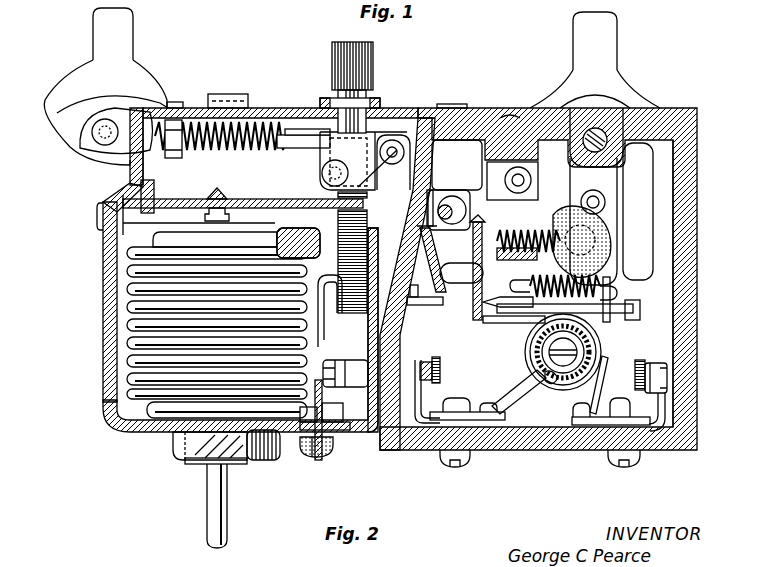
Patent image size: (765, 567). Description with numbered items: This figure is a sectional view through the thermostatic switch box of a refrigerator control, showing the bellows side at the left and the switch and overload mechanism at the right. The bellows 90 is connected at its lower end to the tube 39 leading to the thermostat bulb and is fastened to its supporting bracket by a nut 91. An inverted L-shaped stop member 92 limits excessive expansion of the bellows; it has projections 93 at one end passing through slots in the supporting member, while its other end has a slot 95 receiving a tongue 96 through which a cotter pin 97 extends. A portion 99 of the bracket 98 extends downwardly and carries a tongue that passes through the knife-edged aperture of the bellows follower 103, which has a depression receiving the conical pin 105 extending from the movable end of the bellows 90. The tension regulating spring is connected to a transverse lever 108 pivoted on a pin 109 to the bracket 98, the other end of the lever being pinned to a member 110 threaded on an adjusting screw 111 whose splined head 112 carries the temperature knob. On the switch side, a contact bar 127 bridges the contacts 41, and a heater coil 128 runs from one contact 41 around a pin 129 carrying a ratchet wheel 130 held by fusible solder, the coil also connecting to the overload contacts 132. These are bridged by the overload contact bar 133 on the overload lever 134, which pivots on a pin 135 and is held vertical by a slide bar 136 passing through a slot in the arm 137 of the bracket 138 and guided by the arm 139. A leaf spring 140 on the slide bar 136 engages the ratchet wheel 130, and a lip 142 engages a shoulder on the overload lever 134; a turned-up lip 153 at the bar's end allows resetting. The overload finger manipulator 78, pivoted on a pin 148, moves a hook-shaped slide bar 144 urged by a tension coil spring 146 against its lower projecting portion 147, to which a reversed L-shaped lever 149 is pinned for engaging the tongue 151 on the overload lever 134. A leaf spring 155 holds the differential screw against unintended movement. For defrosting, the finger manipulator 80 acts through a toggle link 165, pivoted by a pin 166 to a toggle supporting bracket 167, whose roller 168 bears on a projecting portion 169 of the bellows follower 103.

The tube 39 is at (220, 507).
The contacts 41 is at (665, 376).
The overload finger manipulator 78 is at (606, 40).
The defrosting finger manipulator 80 is at (122, 37).
The bellows 90 is at (143, 307).
The nut 91 is at (170, 445).
The stop member 92 is at (140, 228).
The projections 93 is at (102, 222).
The aperture or slot 95 is at (298, 425).
The tongue 96 is at (348, 440).
The cotter pin 97 is at (318, 413).
The bracket 98 is at (264, 108).
The portion of bracket 99 is at (147, 186).
The bellows follower 103 is at (243, 196).
The conical pin 105 is at (235, 215).
The transverse lever 108 is at (340, 348).
The pin 109 is at (390, 427).
The member 110 is at (288, 256).
The adjusting screw 111 is at (360, 135).
The splined head 112 is at (370, 57).
The contact bar 127 is at (636, 372).
The heater coil 128 is at (567, 385).
The pin 129 is at (590, 357).
The ratchet wheel 130 is at (552, 378).
The overload contacts 132 is at (443, 395).
The overload contact bar 133 is at (450, 362).
The overload lever 134 is at (437, 178).
The pin 135 is at (450, 200).
The slide bar 136 is at (633, 311).
The arm 137 is at (608, 282).
The bracket 138 is at (556, 232).
The arm 139 is at (463, 312).
The leaf spring member 140 is at (511, 333).
The lip or tongue 142 is at (442, 322).
The hook-shaped slide bar 144 is at (643, 213).
The tension coil spring 146 is at (483, 260).
The lower projecting portion 147 is at (602, 180).
The pin 148 is at (608, 132).
The reversed L-shaped lever 149 is at (593, 262).
The lip or tongue 151 is at (461, 273).
The turned-up lip 153 is at (421, 298).
The leaf spring 155 is at (498, 110).
The toggle link 165 is at (325, 143).
The pin 166 is at (395, 148).
The toggle supporting bracket 167 is at (398, 187).
The roller 168 is at (320, 186).
The projecting portion 169 is at (294, 207).